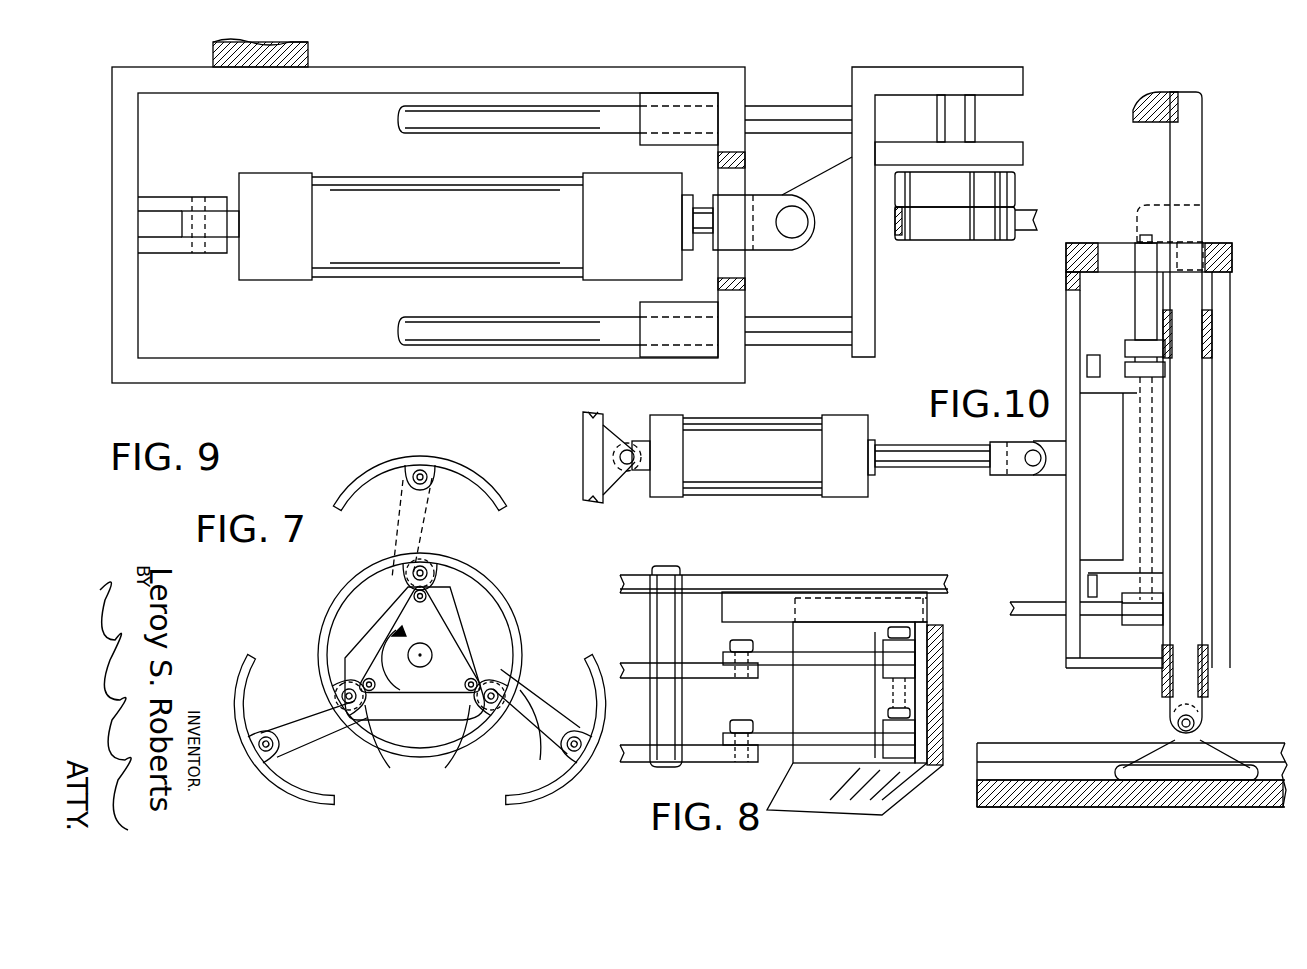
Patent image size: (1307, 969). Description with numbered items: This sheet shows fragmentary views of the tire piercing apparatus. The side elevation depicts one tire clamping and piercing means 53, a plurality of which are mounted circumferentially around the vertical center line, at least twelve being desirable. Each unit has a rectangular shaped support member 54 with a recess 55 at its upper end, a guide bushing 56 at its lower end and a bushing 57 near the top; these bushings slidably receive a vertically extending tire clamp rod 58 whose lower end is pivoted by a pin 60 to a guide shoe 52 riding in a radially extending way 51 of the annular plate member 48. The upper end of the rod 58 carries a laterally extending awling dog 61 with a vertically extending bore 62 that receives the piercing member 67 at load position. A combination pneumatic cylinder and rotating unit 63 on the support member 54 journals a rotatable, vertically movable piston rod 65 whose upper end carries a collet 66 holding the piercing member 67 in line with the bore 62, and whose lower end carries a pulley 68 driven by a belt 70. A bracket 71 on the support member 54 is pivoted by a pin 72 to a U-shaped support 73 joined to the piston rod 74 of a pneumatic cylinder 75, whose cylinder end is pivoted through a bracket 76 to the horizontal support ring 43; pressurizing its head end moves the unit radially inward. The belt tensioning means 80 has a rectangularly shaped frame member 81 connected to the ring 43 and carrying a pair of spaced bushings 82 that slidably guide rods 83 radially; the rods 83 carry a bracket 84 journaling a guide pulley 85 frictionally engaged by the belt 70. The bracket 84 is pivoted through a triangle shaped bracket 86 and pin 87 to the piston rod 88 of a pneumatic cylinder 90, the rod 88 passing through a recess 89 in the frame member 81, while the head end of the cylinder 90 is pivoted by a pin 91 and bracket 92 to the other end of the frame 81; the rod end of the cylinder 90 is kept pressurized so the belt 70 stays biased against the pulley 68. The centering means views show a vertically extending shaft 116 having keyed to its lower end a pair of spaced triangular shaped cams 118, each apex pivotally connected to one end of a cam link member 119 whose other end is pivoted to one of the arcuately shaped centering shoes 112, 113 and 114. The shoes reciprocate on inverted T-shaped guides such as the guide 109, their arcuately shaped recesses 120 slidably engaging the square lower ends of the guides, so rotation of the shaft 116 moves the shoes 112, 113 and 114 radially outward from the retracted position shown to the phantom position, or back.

In FIG. 9, the horizontal support ring 43 is at (213, 52).
In FIG. 10, the horizontal support ring 43 is at (583, 452).
In FIG. 10, the annular plate member 48 is at (1230, 795).
In FIG. 10, the radially extending ways 51 is at (1085, 773).
In FIG. 10, the guide shoe 52 is at (1205, 742).
In FIG. 10, the tire clamping and piercing means 53 is at (1214, 175).
In FIG. 10, the rectangular shaped support member 54 is at (1220, 600).
In FIG. 10, the recess 55 is at (1200, 263).
In FIG. 10, the guide bushing 56 is at (1157, 672).
In FIG. 10, the bushing 57 is at (1207, 323).
In FIG. 10, the tire clamp rod 58 is at (1192, 470).
In FIG. 10, the pin 60 is at (1178, 723).
In FIG. 10, the awling dog 61 is at (1160, 203).
In FIG. 10, the bore 62 is at (1150, 105).
In FIG. 10, the combination pneumatic cylinder and rotating unit 63 is at (1130, 480).
In FIG. 10, the rotatable piston rod 65 is at (1140, 313).
In FIG. 10, the collet 66 is at (1155, 255).
In FIG. 10, the piercing member 67 is at (1143, 240).
In FIG. 10, the pulley 68 is at (1143, 620).
In FIG. 9, the belt 70 is at (893, 235).
In FIG. 10, the belt 70 is at (1020, 605).
In FIG. 10, the bracket 71 is at (1066, 440).
In FIG. 10, the pin 72 is at (1030, 463).
In FIG. 10, the U-shaped support 73 is at (997, 470).
In FIG. 10, the piston rod 74 is at (942, 457).
In FIG. 10, the pneumatic cylinder 75 is at (782, 463).
In FIG. 10, the bracket 76 is at (610, 478).
In FIG. 9, the belt tensioning means 80 is at (428, 223).
In FIG. 9, the rectangularly shaped frame member 81 is at (252, 378).
In FIG. 9, the bushings 82 is at (655, 138).
In FIG. 9, the guide rods 83 is at (490, 125).
In FIG. 9, the bracket 84 is at (863, 298).
In FIG. 9, the guide pulley 85 is at (918, 240).
In FIG. 9, the triangle shaped bracket 86 is at (843, 175).
In FIG. 9, the pin 87 is at (798, 228).
In FIG. 9, the piston rod 88 is at (703, 225).
In FIG. 9, the recess 89 is at (736, 165).
In FIG. 9, the pneumatic cylinder 90 is at (473, 228).
In FIG. 9, the pin 91 is at (168, 255).
In FIG. 9, the bracket 92 is at (155, 203).
In FIG. 8, the inverted T-shaped guide 109 is at (842, 620).
In FIG. 7, the centering shoe 112 is at (373, 466).
In FIG. 7, the centering shoe 113 is at (527, 637).
In FIG. 8, the centering shoe 113 is at (930, 690).
In FIG. 7, the centering shoe 114 is at (323, 640).
In FIG. 7, the shaft 116 is at (428, 650).
In FIG. 8, the shaft 116 is at (662, 765).
In FIG. 7, the triangular shaped cams 118 is at (440, 694).
In FIG. 8, the triangular shaped cams 118 is at (700, 672).
In FIG. 7, the cam link member 119 is at (388, 597).
In FIG. 8, the cam link member 119 is at (857, 738).
In FIG. 8, the arcuately shaped recesses 120 is at (928, 625).